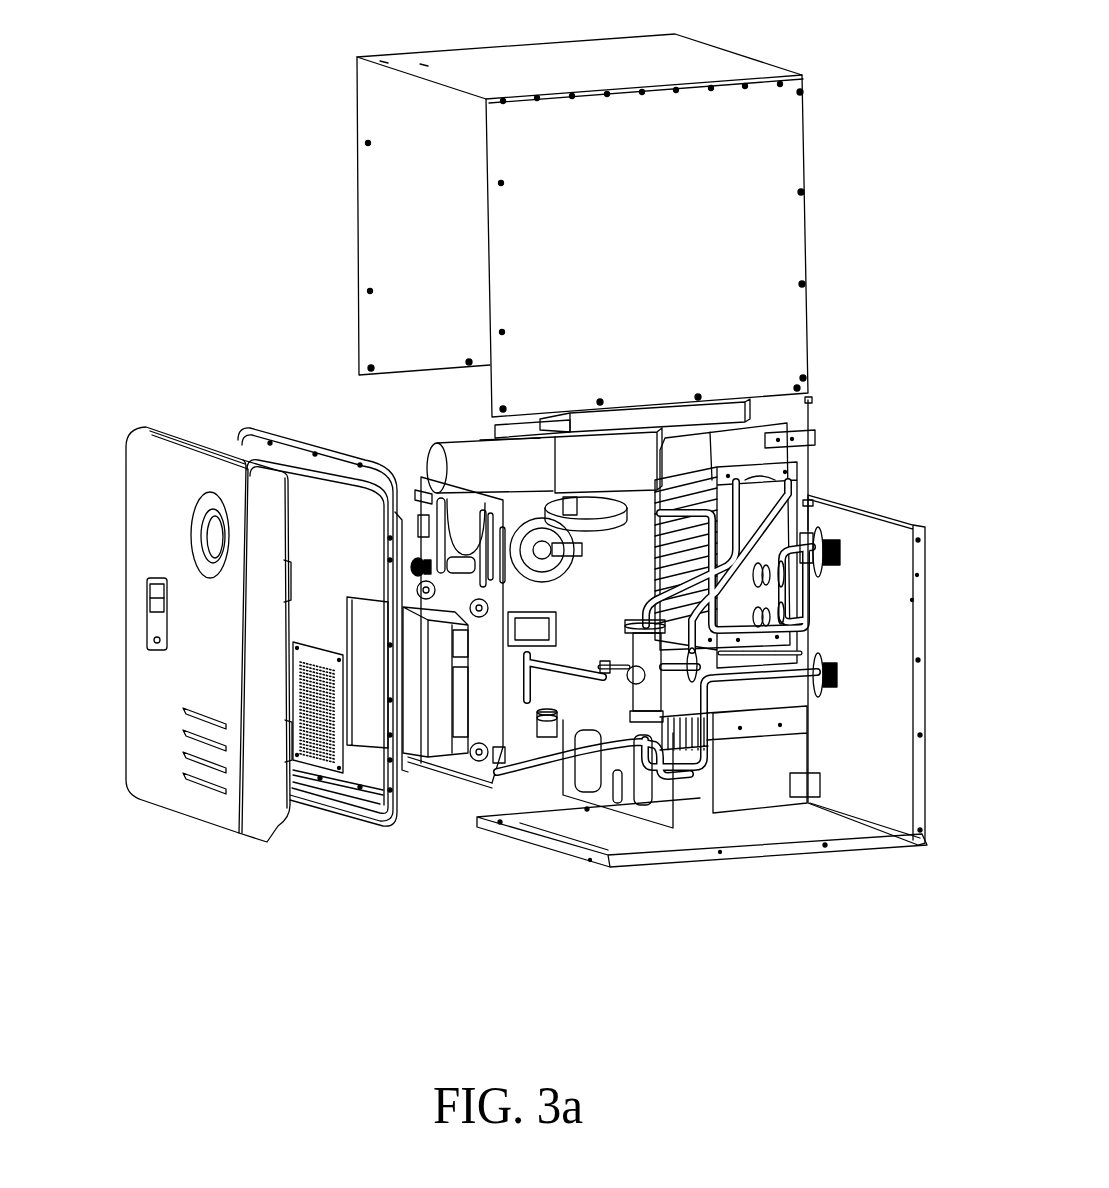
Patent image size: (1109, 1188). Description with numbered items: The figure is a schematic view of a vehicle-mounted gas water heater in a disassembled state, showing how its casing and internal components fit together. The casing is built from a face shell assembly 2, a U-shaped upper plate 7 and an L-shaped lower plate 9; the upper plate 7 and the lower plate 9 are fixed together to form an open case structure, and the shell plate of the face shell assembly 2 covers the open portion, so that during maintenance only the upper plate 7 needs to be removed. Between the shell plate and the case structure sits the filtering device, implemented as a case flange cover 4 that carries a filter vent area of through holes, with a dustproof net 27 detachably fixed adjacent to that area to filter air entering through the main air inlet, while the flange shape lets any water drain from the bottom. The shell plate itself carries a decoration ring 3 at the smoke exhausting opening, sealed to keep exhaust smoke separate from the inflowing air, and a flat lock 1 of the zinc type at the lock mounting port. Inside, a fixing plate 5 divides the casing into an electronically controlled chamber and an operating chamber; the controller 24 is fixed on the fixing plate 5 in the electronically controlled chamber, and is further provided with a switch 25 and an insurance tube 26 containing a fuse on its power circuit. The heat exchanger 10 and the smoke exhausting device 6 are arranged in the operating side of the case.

The flat lock 1 is at (153, 617).
The face shell assembly 2 is at (180, 623).
The decoration ring 3 is at (203, 510).
The case flange cover 4 is at (233, 633).
The fixing plate 5 is at (425, 495).
The smoke exhausting device 6 is at (585, 453).
The upper plate 7 is at (393, 208).
The lower plate 9 is at (897, 600).
The heat exchanger 10 is at (750, 540).
The controller 24 is at (418, 683).
The switch 25 is at (425, 497).
The insurance tube 26 is at (418, 574).
The dustproof net 27 is at (323, 707).